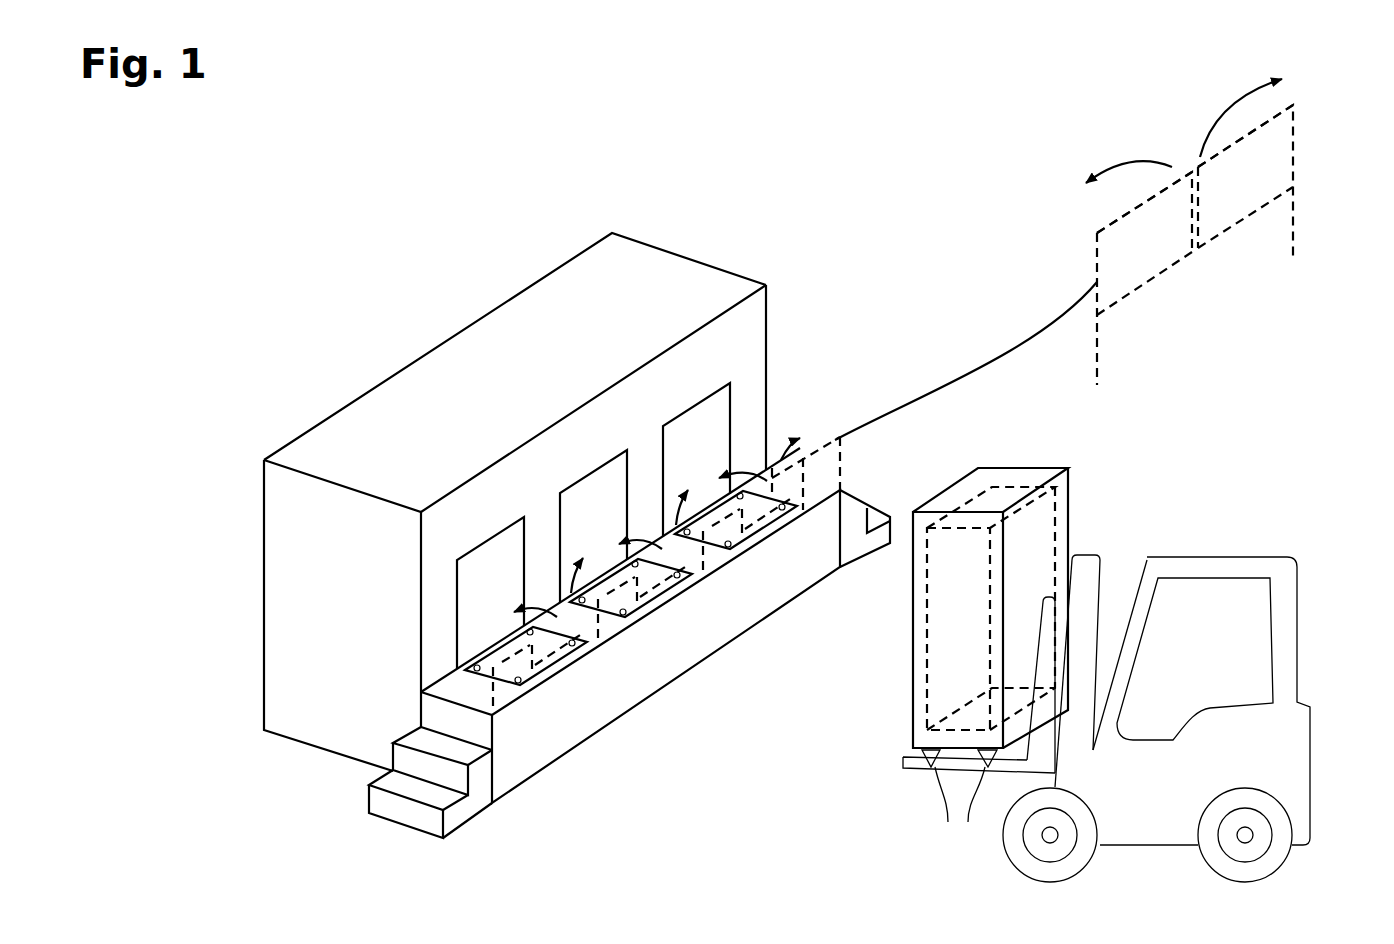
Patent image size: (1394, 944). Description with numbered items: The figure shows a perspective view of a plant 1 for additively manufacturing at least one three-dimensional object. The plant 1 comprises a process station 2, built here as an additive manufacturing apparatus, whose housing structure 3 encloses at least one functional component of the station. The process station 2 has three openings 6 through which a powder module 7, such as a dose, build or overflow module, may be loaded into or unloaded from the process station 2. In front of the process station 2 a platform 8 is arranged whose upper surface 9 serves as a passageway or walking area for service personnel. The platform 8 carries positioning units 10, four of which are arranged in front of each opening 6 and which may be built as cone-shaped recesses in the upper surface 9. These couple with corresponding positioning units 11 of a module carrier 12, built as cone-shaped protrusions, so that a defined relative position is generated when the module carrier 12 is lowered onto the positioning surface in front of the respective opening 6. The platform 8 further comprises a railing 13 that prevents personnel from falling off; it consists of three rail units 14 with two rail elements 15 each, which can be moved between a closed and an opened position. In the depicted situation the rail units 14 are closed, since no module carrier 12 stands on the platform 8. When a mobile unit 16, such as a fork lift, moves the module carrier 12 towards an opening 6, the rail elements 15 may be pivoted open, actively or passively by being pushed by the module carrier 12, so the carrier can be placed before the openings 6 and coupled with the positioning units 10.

The plant 1 is at (640, 146).
The process station 2 is at (354, 439).
The housing structure 3 is at (680, 255).
The openings 6 is at (490, 538).
The powder module 7 is at (1005, 495).
The platform 8 is at (534, 746).
The upper surface 9 is at (450, 690).
The positioning units 10 is at (556, 678).
The positioning units 11 is at (959, 804).
The module carrier 12 is at (1069, 495).
The railing 13 is at (470, 691).
The rail units 14 is at (553, 606).
The rail elements 15 is at (1103, 225).
The mobile unit 16 is at (1299, 559).